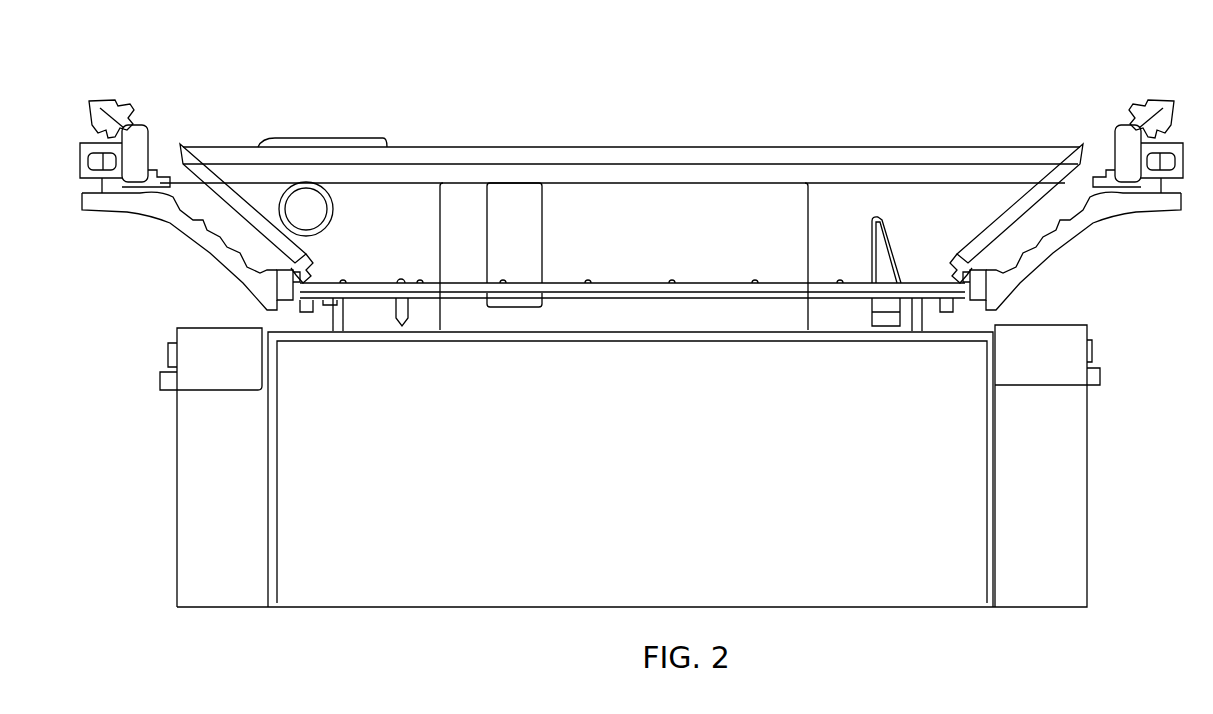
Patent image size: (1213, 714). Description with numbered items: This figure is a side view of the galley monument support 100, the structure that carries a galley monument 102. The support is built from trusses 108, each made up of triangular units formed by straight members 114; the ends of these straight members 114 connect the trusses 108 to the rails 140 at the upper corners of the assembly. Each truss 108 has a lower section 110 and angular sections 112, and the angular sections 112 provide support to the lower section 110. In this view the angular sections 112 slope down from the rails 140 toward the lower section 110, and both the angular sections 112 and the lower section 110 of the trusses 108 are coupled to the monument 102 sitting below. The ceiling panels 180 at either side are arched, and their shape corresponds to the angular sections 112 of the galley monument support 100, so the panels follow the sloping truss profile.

The galley monument support 100 is at (692, 127).
The monument 102 is at (208, 490).
The trusses 108 is at (275, 242).
The lower section 110 is at (317, 283).
The angular sections 112 is at (228, 198).
The straight members 114 is at (412, 158).
The rails 140 is at (147, 125).
The ceiling panels 180 is at (223, 262).